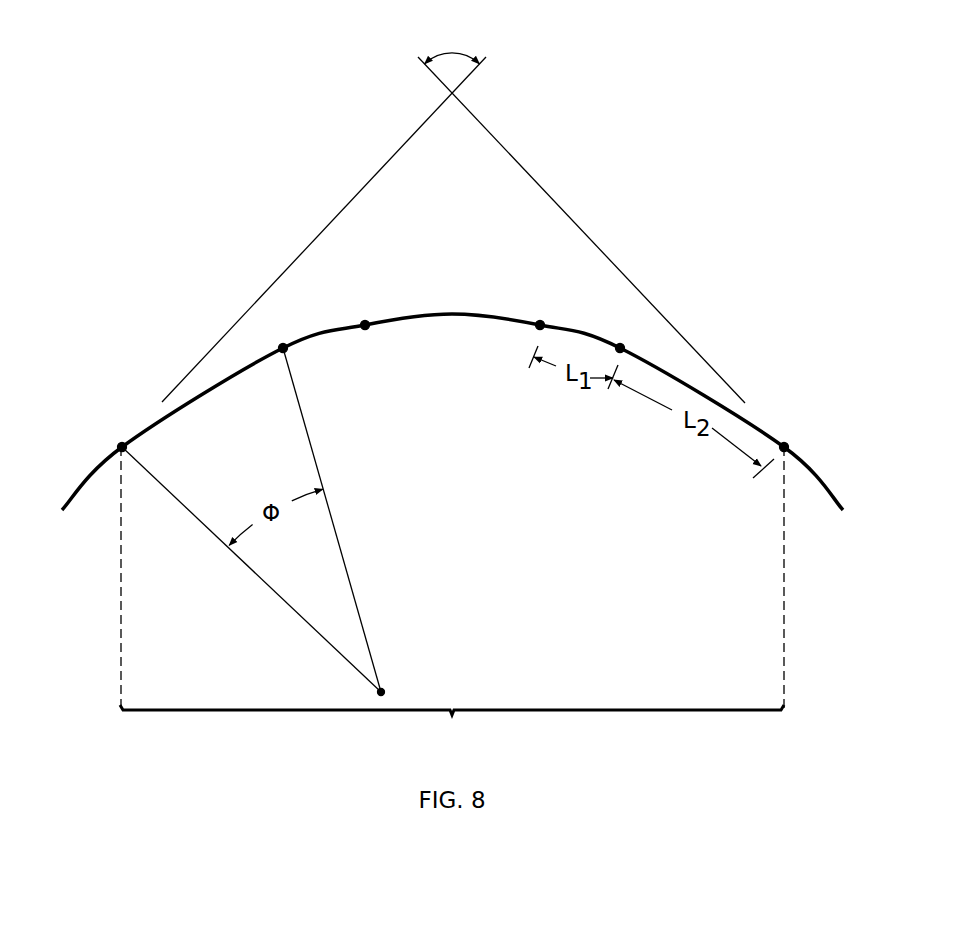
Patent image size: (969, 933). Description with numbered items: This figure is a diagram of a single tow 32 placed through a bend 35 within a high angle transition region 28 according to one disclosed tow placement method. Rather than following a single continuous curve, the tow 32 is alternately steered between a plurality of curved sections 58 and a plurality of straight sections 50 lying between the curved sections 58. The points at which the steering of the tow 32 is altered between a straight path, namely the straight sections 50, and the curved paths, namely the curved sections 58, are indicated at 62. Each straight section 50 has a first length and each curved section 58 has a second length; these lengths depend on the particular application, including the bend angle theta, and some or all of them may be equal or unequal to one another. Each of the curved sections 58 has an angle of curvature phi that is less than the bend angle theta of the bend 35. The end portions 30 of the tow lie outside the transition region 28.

The high angle transition region 28 is at (452, 600).
The end segments of arcuate member 30 is at (90, 478).
The tow 32 is at (488, 312).
The bend 35 is at (298, 172).
The straight sections 50 is at (320, 334).
The curved sections 58 is at (197, 387).
The points at which tow steering is altered 62 is at (292, 352).